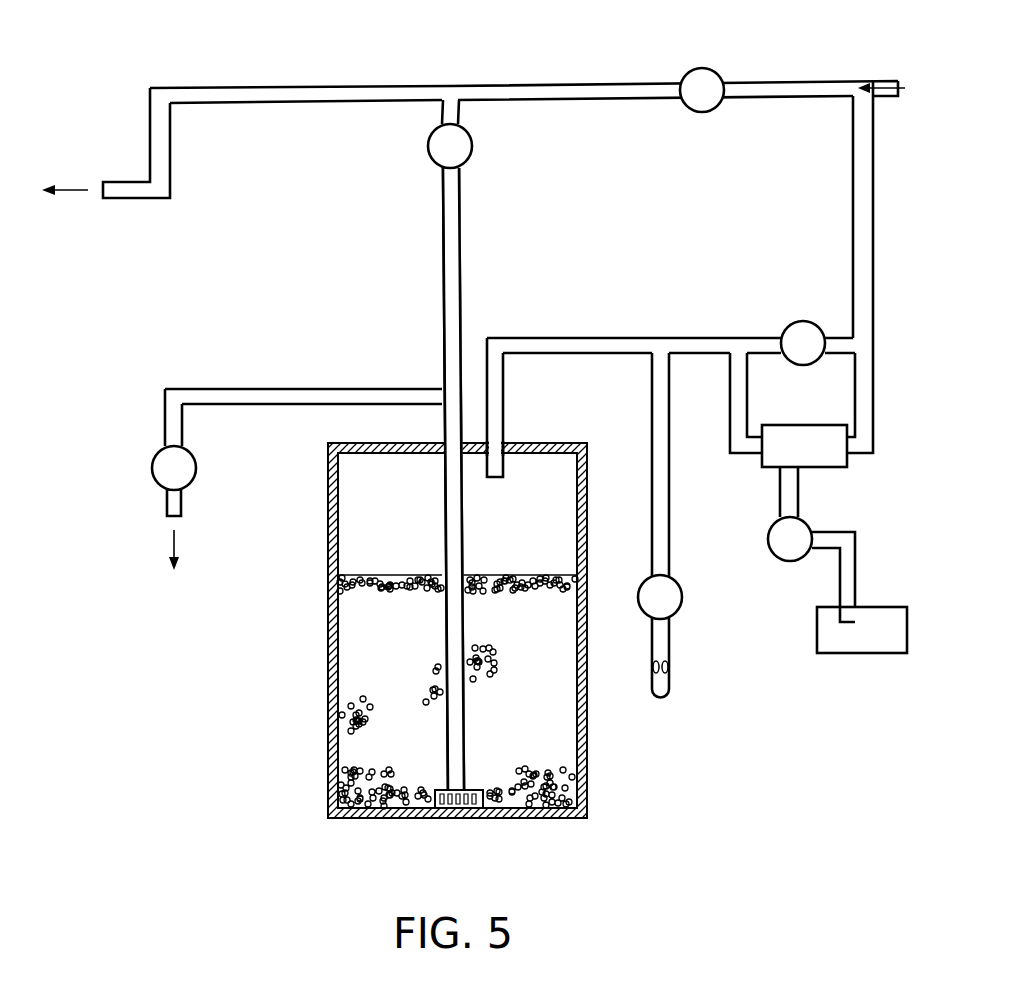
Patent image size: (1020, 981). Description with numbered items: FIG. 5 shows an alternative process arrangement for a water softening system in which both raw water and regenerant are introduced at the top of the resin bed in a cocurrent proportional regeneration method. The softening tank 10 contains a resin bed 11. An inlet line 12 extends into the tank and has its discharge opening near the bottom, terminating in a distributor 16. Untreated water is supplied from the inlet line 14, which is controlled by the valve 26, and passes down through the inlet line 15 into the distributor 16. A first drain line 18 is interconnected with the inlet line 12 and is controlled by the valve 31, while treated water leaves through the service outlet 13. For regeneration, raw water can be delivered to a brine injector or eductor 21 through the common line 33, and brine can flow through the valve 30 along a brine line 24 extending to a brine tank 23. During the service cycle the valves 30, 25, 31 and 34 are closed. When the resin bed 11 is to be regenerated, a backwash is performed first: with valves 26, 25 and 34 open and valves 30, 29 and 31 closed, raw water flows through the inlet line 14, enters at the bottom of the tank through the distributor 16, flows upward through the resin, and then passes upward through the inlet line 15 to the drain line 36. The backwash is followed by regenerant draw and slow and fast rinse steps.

The softening tank 10 is at (342, 728).
The resin bed 11 is at (340, 597).
The inlet line 12 is at (445, 500).
The service outlet 13 is at (112, 182).
The inlet line 14 is at (780, 80).
The inlet line 15 is at (541, 336).
The distributor 16 is at (470, 808).
The first drain line 18 is at (172, 388).
The brine injector or eductor 21 is at (762, 460).
The brine tank 23 is at (848, 650).
The brine line 24 is at (840, 562).
The valve 25 is at (687, 73).
The valve 26 is at (428, 146).
The valve 29 is at (793, 322).
The valve 30 is at (768, 540).
The valve 31 is at (152, 470).
The common line 33 is at (853, 172).
The valve 34 is at (643, 607).
The drain line 36 is at (650, 470).